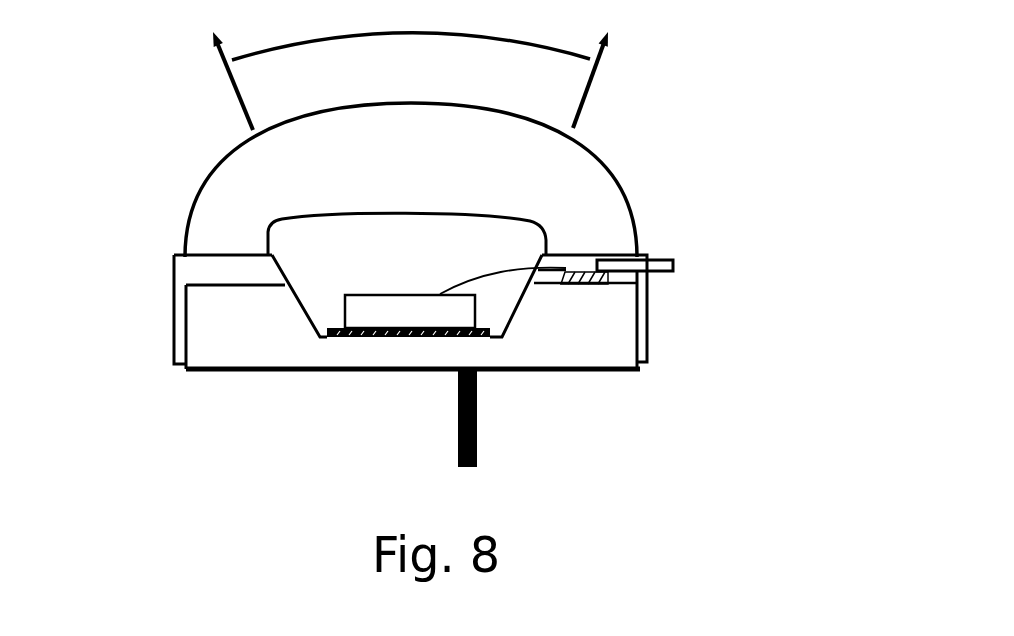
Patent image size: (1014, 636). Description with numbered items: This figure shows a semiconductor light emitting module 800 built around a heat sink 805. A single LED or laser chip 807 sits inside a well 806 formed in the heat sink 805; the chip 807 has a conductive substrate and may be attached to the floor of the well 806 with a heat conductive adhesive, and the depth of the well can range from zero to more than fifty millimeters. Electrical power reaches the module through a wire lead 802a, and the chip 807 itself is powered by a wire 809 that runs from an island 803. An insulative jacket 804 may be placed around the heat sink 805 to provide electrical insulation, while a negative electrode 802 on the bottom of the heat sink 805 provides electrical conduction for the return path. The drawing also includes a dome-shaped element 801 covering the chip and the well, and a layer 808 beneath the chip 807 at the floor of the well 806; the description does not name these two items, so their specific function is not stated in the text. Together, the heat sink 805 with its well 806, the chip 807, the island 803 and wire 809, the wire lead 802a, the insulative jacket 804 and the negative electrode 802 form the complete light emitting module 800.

The semiconductor light emitting module 800 is at (752, 119).
The lens / encapsulant dome 801 is at (555, 177).
The negative electrode 802 is at (457, 402).
The wire lead 802a is at (657, 254).
The island 803 is at (640, 283).
The insulative jacket 804 is at (645, 282).
The heat sink 805 is at (613, 338).
The well 806 is at (300, 313).
The LED or laser chip 807 is at (378, 315).
The die attach layer 808 is at (478, 336).
The wire 809 is at (495, 277).